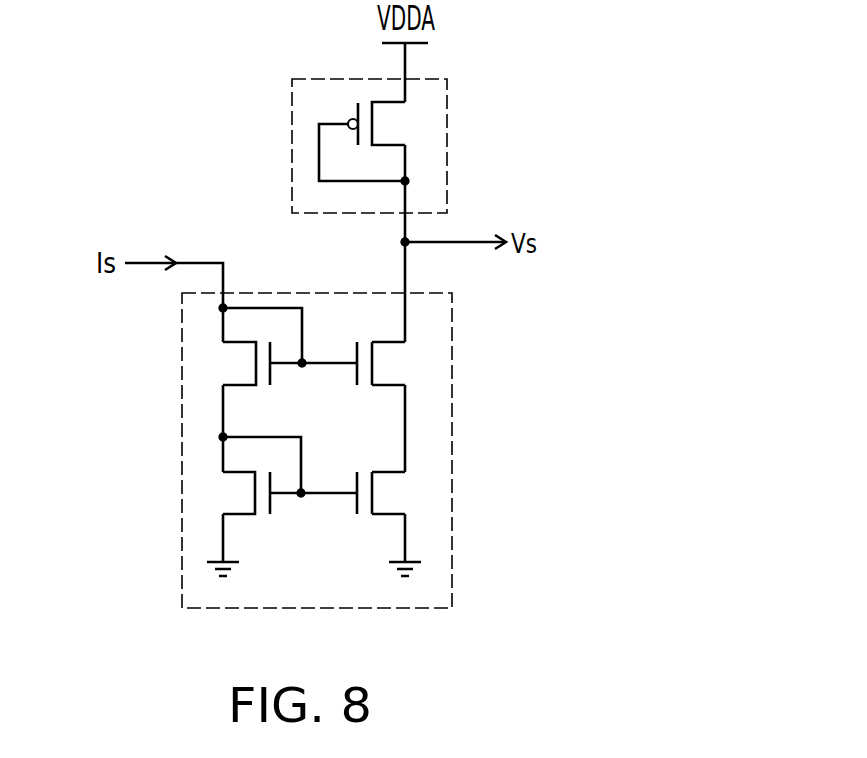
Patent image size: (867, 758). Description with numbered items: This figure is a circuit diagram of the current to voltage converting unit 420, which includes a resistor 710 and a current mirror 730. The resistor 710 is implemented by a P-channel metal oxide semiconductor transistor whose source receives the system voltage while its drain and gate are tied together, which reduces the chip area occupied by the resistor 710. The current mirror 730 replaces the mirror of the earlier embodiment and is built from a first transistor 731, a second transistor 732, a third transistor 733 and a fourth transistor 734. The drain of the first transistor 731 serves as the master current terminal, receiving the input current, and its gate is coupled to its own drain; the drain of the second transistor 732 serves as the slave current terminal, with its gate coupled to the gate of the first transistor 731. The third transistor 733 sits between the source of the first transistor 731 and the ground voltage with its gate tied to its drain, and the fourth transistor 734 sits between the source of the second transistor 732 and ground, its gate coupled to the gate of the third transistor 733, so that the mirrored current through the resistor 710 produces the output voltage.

The resistor 710 is at (447, 146).
The current mirror 730 is at (452, 438).
The first transistor 731 is at (280, 378).
The second transistor 732 is at (403, 360).
The third transistor 733 is at (280, 507).
The fourth transistor 734 is at (397, 492).
The current to voltage converting unit 420 is at (559, 564).